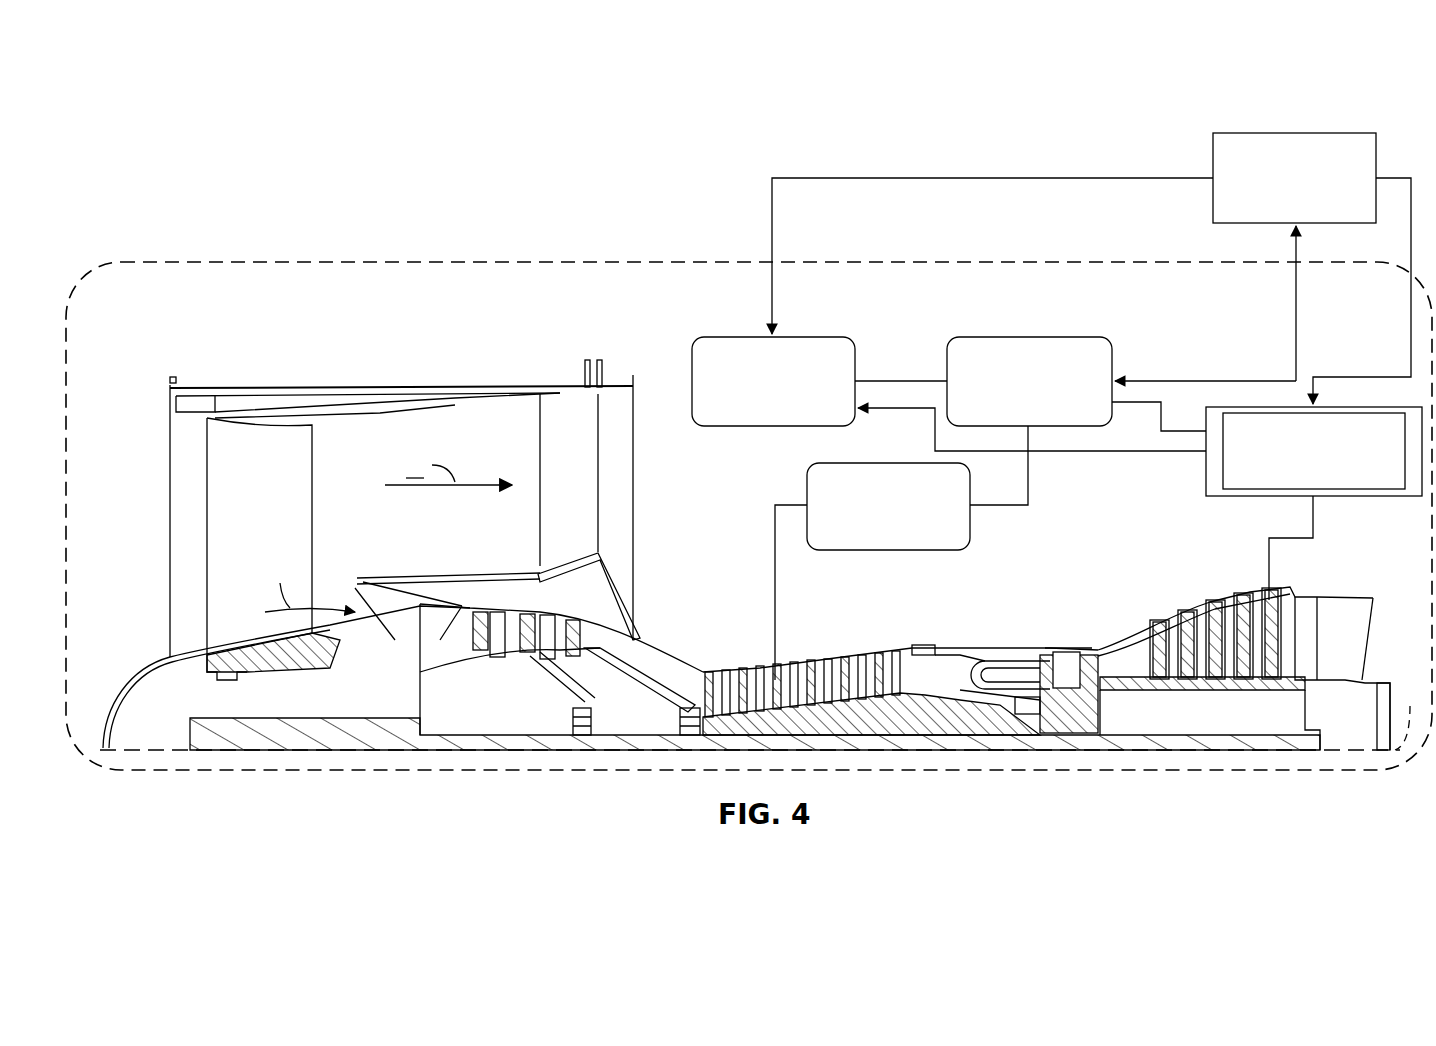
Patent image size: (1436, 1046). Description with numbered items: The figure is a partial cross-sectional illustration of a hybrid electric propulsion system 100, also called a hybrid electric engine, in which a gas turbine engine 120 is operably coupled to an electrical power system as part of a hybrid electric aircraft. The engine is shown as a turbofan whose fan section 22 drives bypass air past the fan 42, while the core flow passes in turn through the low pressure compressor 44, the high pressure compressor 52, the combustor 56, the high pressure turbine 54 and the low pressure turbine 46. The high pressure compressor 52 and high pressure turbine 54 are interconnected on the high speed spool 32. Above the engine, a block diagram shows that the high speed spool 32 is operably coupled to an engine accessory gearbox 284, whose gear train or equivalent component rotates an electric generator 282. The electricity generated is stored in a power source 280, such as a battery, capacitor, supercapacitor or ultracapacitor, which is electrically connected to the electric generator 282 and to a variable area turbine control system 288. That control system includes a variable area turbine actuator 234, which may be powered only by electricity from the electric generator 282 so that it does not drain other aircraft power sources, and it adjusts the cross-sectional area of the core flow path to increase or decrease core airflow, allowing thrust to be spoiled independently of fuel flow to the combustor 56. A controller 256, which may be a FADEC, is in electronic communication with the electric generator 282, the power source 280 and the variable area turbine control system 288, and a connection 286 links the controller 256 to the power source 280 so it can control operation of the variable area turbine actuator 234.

The hybrid electric propulsion system 100 is at (305, 162).
The gas turbine engine 120 is at (250, 216).
The fan section 22 is at (265, 368).
The fan 42 is at (291, 517).
The low pressure compressor 44 is at (552, 632).
The high pressure compressor 52 is at (790, 718).
The high speed spool 32 is at (905, 700).
The combustor 56 is at (993, 668).
The high pressure turbine 54 is at (1068, 650).
The low pressure turbine 46 is at (1235, 615).
The variable area turbine control system 288 is at (1360, 497).
The variable area turbine actuator 234 is at (1220, 478).
The controller 256 is at (1296, 133).
The control signal line 286 is at (1040, 150).
The power source 280 is at (757, 338).
The electric generator 282 is at (1030, 338).
The engine accessory gearbox 284 is at (972, 522).